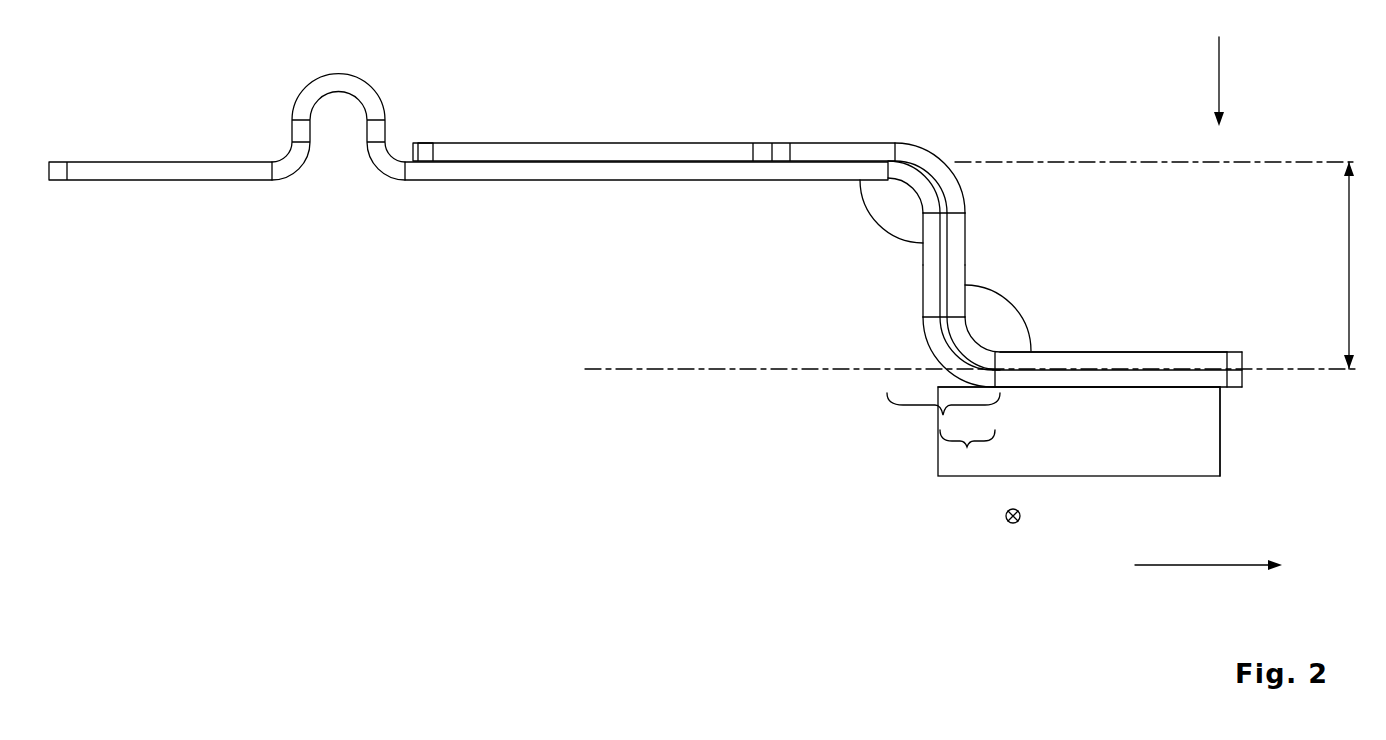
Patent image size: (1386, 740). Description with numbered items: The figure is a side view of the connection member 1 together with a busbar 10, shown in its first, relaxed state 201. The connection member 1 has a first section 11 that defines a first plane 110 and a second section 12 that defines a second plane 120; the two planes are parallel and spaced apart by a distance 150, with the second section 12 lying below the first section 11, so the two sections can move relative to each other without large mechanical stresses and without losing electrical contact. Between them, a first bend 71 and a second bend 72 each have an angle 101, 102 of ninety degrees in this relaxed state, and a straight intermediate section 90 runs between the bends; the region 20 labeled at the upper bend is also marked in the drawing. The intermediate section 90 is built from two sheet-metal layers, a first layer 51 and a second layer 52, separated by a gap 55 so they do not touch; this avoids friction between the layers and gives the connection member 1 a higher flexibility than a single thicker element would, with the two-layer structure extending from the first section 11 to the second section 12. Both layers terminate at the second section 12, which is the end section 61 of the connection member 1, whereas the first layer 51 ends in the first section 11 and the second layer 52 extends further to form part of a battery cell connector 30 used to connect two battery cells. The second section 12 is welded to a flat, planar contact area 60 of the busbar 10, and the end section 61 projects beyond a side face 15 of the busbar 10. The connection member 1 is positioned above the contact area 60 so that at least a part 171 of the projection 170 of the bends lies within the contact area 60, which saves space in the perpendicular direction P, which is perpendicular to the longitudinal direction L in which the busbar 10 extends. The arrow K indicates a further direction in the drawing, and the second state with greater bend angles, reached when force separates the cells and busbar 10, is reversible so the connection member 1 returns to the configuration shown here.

The connection member 1 is at (836, 70).
The busbar 10 is at (1108, 460).
The first section 11 is at (565, 118).
The second section 12 is at (1234, 398).
The side face 15 is at (1222, 432).
The first bend 20 is at (922, 140).
The battery cell connector 30 is at (262, 131).
The first layer 51 is at (967, 225).
The second layer 52 is at (922, 258).
The gap 55 is at (967, 275).
The contact area 60 is at (1133, 388).
The end section 61 is at (454, 118).
The first bend 71 is at (962, 138).
The second bend 72 is at (897, 378).
The intermediate section 90 is at (922, 305).
The angle 101 is at (868, 211).
The angle 102 is at (1022, 318).
The first plane 110 is at (721, 159).
The second plane 120 is at (705, 372).
The distance 150 is at (1347, 235).
The projection 170 is at (905, 407).
The part 171 is at (967, 447).
The first, relaxed state 201 is at (666, 118).
The force direction K is at (1222, 80).
The longitudinal direction L is at (1012, 525).
The perpendicular direction P is at (1210, 567).